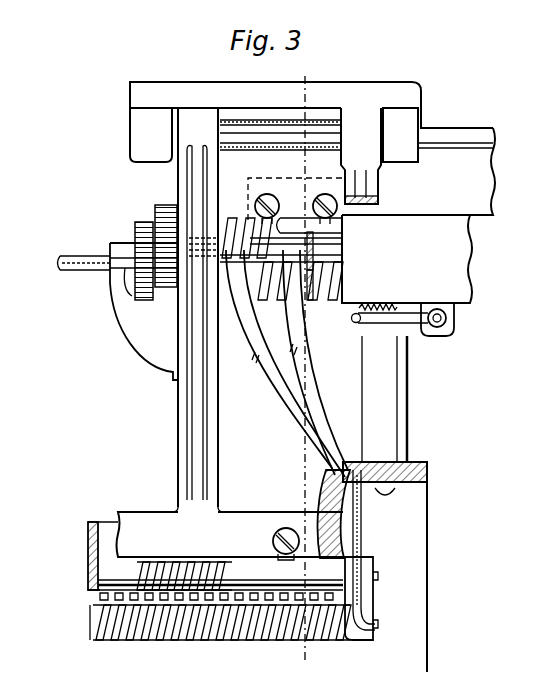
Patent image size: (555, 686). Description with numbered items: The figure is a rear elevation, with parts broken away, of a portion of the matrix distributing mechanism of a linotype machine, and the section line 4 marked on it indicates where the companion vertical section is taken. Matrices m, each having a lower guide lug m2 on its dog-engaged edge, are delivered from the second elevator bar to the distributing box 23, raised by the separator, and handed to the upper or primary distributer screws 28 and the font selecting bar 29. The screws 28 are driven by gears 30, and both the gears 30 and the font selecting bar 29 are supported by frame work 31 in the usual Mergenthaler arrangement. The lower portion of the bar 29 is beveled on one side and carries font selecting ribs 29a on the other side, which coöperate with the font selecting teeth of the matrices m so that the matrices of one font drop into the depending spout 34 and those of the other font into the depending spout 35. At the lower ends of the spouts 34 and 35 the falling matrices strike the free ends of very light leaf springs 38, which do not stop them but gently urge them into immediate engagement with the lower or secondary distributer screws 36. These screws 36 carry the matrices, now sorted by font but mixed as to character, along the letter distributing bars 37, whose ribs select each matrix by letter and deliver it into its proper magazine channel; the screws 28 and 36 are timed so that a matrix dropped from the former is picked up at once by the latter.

The section line x4-x4 4 is at (342, 73).
The distributing box 23 is at (407, 259).
The primary distributer screws 28 is at (233, 225).
The font selecting bar 29 is at (343, 228).
The font selecting ribs 29a is at (336, 238).
The matrix m is at (312, 265).
The lower guide lug m2 is at (312, 280).
The gears 30 is at (156, 216).
The frame work 31 is at (418, 171).
The depending spout 34 is at (300, 398).
The depending spout 35 is at (267, 383).
The secondary distributer screws 36 is at (178, 590).
The letter distributing bars 37 is at (100, 550).
The leaf springs 38 is at (358, 537).